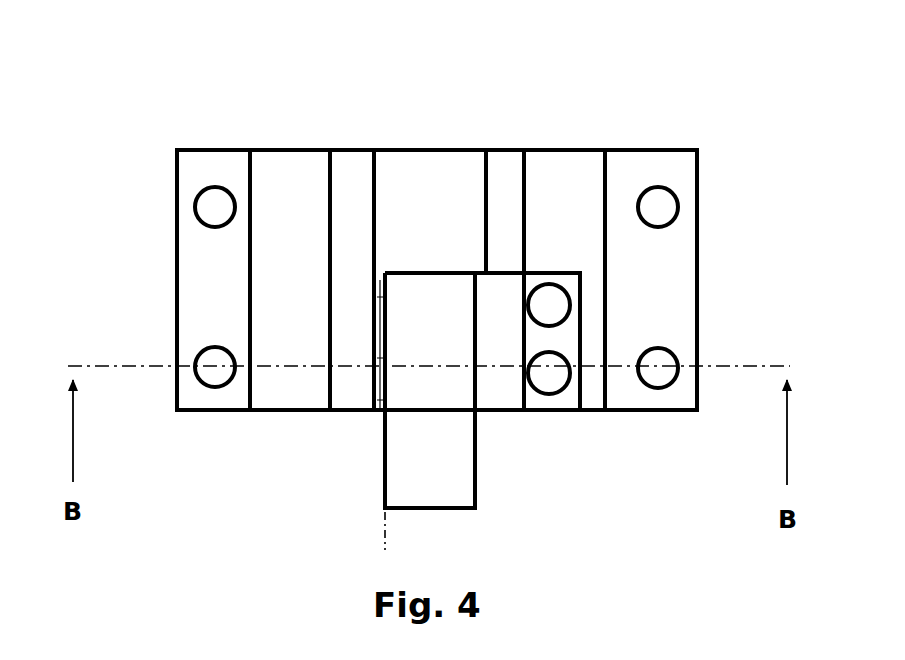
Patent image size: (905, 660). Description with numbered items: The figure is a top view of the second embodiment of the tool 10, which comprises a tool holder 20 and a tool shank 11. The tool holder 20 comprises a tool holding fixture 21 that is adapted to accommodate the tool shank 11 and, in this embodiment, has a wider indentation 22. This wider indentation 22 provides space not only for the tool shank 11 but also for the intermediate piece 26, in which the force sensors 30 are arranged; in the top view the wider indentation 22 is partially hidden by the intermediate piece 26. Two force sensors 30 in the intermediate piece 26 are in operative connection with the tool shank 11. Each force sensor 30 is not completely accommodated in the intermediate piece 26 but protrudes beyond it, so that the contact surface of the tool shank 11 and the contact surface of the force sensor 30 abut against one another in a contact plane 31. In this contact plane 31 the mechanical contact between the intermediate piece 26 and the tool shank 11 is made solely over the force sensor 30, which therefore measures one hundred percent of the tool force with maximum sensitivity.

The tool 10 is at (371, 205).
The tool holder 20 is at (143, 166).
The tool holding fixture 21 is at (598, 436).
The indentation 22 is at (448, 200).
The intermediate piece 26 is at (352, 176).
The force sensor 30 is at (376, 296).
The tool shank 11 is at (412, 468).
The contact plane 31 is at (383, 518).